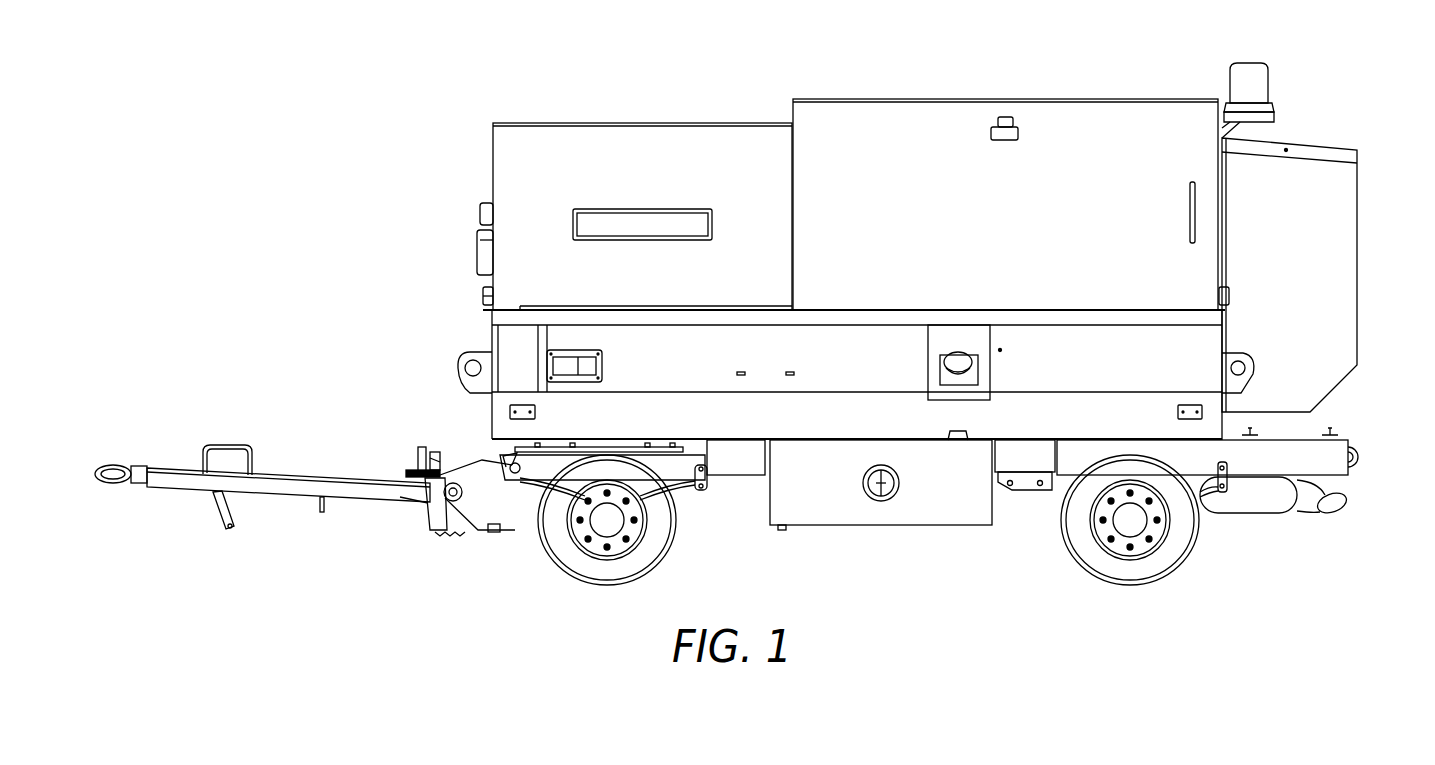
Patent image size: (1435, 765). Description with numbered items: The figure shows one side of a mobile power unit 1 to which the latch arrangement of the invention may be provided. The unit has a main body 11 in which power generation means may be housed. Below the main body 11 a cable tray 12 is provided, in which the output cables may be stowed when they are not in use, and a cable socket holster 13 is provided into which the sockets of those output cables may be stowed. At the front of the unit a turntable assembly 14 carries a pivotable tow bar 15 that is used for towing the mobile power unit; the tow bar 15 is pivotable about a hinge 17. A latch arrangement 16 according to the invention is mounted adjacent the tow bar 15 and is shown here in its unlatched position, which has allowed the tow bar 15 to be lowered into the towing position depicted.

The mobile generator unit 1 is at (676, 74).
The main body 11 is at (1000, 99).
The cable tray 12 is at (872, 391).
The cable socket holster 13 is at (604, 368).
The turntable assembly 14 is at (682, 462).
The tow bar 15 is at (277, 472).
The latch arrangement 16 is at (410, 455).
The hinge 17 is at (452, 482).